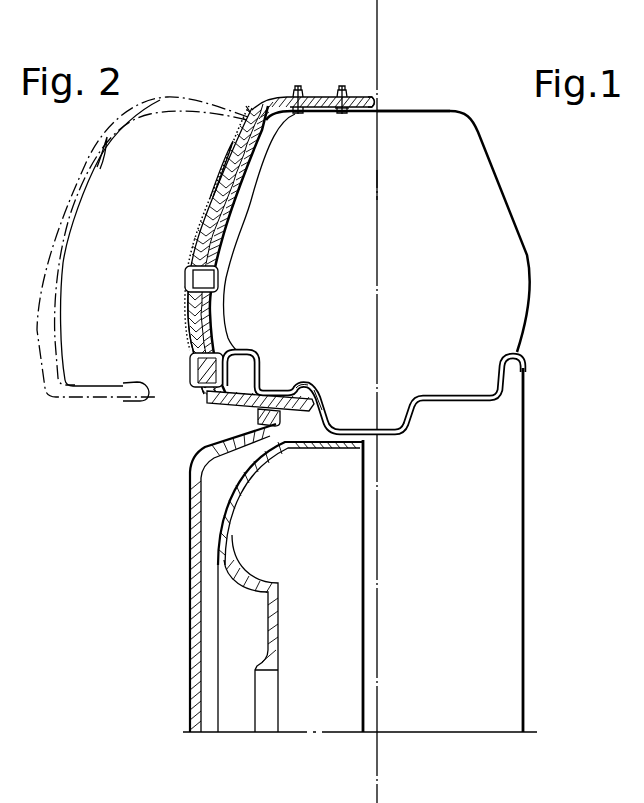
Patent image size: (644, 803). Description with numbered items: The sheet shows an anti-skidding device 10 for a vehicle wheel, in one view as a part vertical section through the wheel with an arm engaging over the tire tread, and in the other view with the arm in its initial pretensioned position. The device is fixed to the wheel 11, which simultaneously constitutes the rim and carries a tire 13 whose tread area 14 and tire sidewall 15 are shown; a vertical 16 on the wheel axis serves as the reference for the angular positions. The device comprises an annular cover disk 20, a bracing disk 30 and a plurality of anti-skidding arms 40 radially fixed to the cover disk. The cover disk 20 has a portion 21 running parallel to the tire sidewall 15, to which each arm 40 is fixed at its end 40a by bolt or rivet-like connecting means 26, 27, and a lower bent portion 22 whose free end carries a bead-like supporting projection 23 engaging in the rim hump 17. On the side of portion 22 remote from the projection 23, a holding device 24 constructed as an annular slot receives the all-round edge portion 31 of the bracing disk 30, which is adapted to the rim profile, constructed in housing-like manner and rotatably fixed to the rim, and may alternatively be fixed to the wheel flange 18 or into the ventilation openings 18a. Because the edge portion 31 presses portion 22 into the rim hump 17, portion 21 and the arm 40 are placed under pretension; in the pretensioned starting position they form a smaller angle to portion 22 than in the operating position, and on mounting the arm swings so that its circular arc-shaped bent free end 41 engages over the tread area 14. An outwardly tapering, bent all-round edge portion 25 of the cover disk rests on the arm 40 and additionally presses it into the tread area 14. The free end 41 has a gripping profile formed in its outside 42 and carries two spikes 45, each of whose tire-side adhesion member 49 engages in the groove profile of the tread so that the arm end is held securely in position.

In FIG. 2, the anti-skidding device 10 is at (163, 447).
In FIG. 1, the wheel 11 is at (440, 399).
In FIG. 1, the tire 13 is at (482, 157).
In FIG. 2, the tread area 14 is at (301, 231).
In FIG. 1, the tread area 14 is at (416, 111).
In FIG. 2, the tire sidewall 15 is at (238, 195).
In FIG. 1, the vertical 16 is at (379, 187).
In FIG. 2, the rim hump 17 is at (308, 382).
In FIG. 2, the wheel flange 18 is at (251, 352).
In FIG. 2, the ventilation openings 18a is at (245, 489).
In FIG. 2, the cover disk 20 is at (191, 234).
In FIG. 2, the portion of cover disk 21 is at (188, 315).
In FIG. 2, the lower bent portion 22 is at (212, 402).
In FIG. 2, the supporting projection 23 is at (315, 394).
In FIG. 2, the holding device 24 is at (266, 408).
In FIG. 2, the edge portion 25 is at (231, 152).
In FIG. 2, the connecting means 26 is at (186, 280).
In FIG. 2, the connecting means 27 is at (190, 362).
In FIG. 2, the bracing disk 30 is at (188, 568).
In FIG. 2, the edge portion 31 is at (298, 448).
In FIG. 2, the anti-skidding arm 40 is at (246, 106).
In FIG. 2, the end of anti-skidding arm 40a is at (198, 386).
In FIG. 2, the free end 41 is at (373, 100).
In FIG. 2, the outside of end 42 is at (283, 96).
In FIG. 2, the spike 45 is at (341, 90).
In FIG. 2, the adhesion member 49 is at (339, 112).